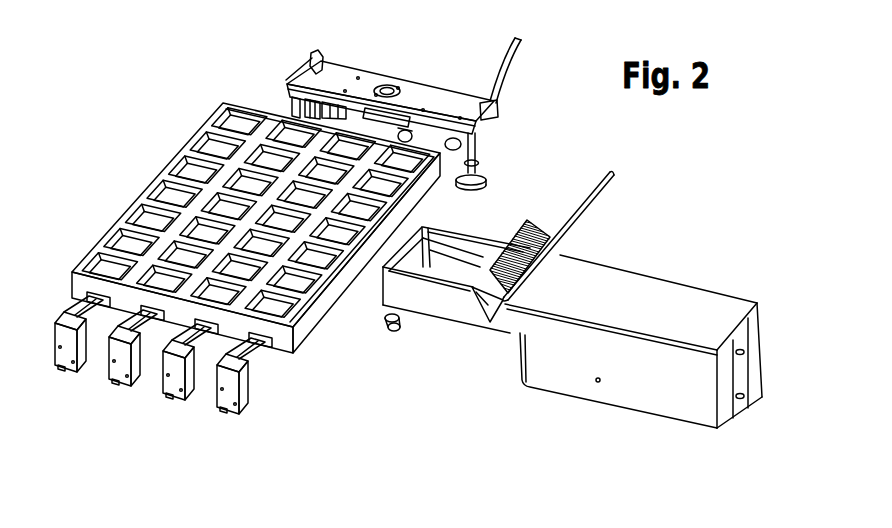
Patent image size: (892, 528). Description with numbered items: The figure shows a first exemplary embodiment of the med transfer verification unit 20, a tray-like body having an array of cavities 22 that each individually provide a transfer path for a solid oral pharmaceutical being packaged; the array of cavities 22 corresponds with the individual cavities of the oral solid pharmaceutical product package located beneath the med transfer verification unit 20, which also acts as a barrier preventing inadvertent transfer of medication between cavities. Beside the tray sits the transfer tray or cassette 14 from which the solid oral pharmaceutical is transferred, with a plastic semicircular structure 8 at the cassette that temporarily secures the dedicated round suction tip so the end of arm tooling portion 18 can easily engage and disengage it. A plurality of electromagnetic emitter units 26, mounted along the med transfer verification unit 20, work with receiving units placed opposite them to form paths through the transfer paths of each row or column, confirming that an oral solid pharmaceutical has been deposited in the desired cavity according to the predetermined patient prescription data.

The plastic semicircular structure 8 is at (423, 228).
The transfer tray or cassette 14 is at (528, 332).
The end of arm tooling portion 18 is at (457, 105).
The med transfer verification unit 20 is at (315, 298).
The array of cavities 22 is at (183, 168).
The electromagnetic emitter units 26 is at (60, 373).